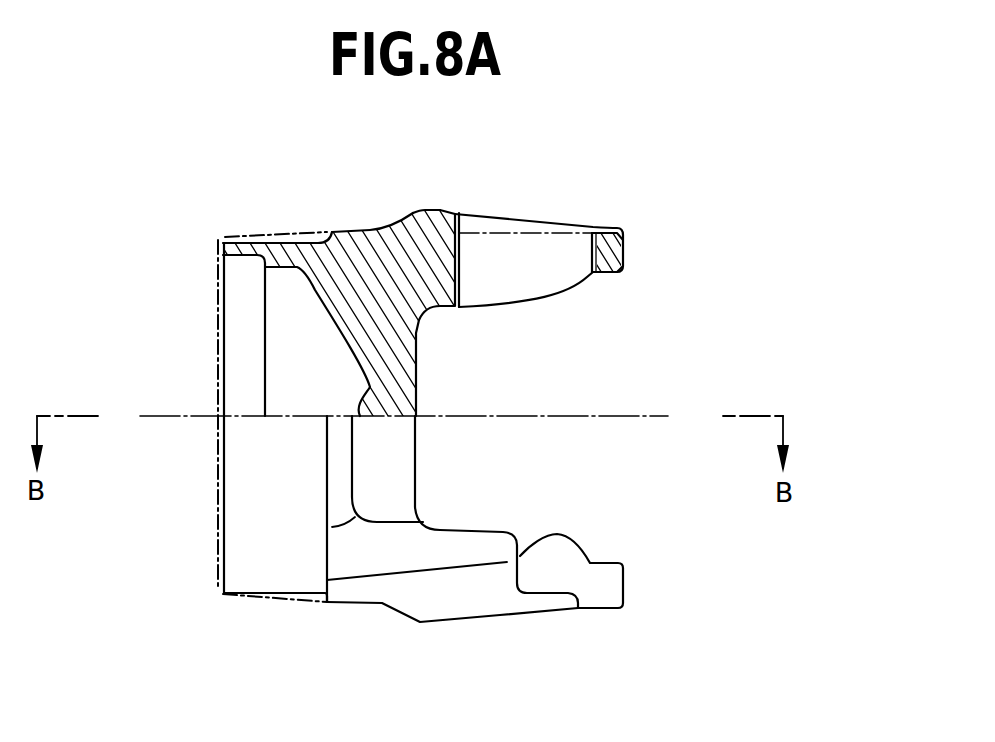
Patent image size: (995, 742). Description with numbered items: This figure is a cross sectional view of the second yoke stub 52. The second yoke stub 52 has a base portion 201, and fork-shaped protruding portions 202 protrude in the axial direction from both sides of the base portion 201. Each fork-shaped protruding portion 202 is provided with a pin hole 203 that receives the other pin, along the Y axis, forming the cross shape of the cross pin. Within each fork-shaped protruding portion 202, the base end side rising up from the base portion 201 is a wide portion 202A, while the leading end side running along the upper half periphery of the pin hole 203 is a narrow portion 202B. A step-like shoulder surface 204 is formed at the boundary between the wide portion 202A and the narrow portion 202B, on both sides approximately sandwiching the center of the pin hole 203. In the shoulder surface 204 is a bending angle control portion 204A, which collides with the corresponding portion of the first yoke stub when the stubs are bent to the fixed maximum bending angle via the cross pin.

The second yoke stub 52 is at (367, 227).
The base portion 201 is at (337, 257).
The fork-shaped protruding portion 202 is at (624, 243).
The wide portion 202A is at (440, 210).
The narrow portion 202B is at (624, 260).
The pin hole 203 is at (590, 252).
The shoulder surface 204 is at (521, 556).
The bending angle control portion 204A is at (530, 554).